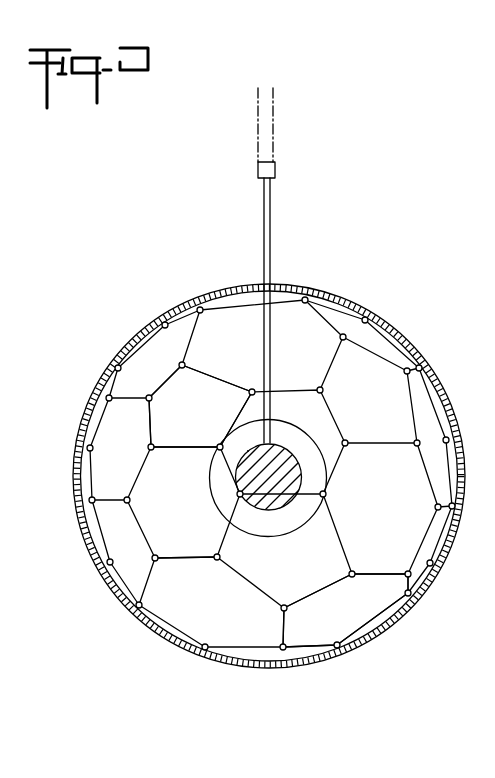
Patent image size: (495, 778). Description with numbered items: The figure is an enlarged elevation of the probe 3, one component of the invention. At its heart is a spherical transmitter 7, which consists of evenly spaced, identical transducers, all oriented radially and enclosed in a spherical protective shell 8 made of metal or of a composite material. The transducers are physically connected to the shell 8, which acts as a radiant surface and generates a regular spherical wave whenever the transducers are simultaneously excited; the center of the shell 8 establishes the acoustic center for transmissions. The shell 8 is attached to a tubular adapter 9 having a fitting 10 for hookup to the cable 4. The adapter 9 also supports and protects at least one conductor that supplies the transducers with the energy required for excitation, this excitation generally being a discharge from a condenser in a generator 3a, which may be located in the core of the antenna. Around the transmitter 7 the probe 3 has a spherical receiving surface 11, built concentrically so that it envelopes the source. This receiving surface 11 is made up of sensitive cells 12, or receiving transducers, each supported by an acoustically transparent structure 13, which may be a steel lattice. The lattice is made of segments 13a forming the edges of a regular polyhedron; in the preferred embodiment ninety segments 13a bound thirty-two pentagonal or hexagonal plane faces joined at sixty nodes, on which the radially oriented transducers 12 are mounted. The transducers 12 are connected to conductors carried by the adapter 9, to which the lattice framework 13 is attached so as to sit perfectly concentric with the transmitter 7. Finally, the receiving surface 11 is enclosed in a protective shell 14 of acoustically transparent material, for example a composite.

The probe 3 is at (66, 392).
The generator 3a is at (247, 450).
The cable 4 is at (268, 127).
The spherical transmitter 7 is at (315, 430).
The shell 8 is at (281, 527).
The tubular adapter 9 is at (263, 240).
The fitting 10 is at (276, 172).
The spherical receiving surface 11 is at (355, 610).
The sensitive cells 12 is at (330, 494).
The acoustically transparent structure 13 is at (160, 375).
The segments 13a is at (188, 540).
The protective shell 14 is at (157, 644).